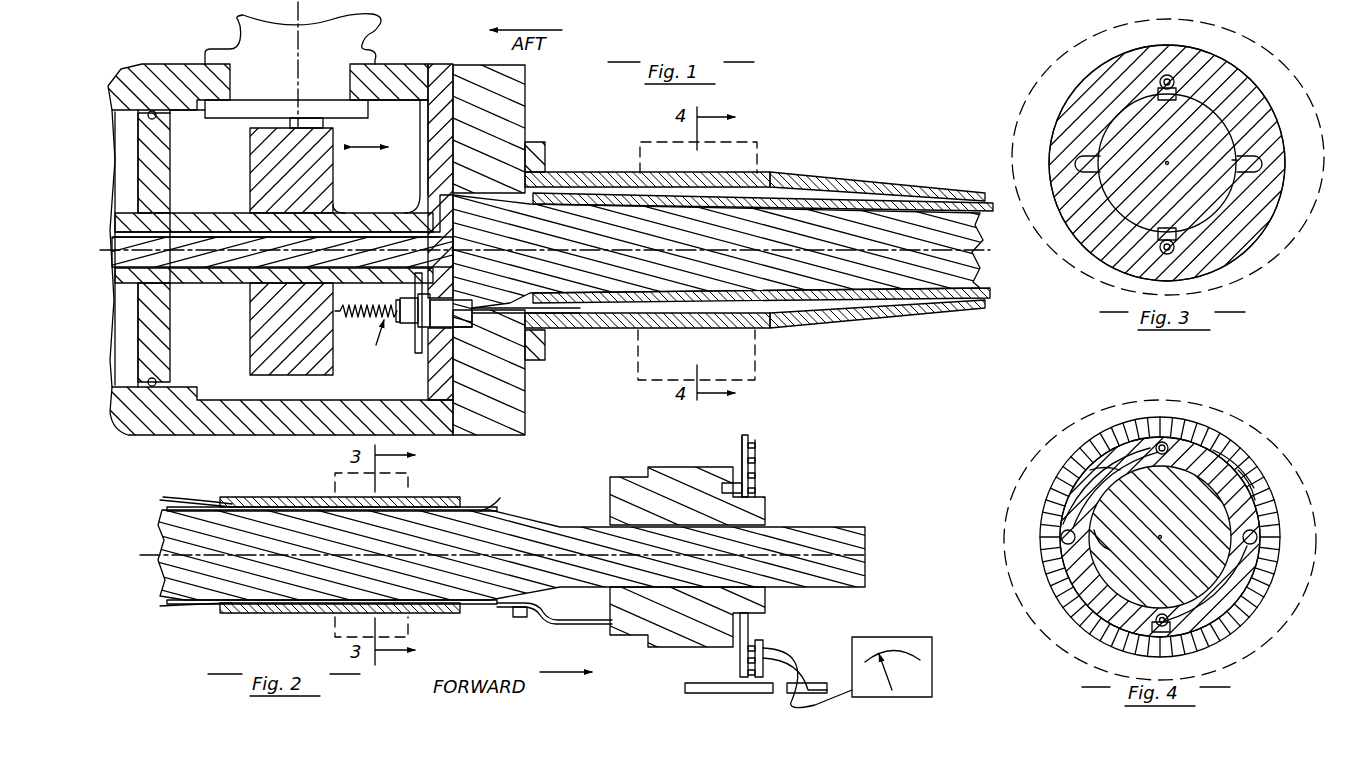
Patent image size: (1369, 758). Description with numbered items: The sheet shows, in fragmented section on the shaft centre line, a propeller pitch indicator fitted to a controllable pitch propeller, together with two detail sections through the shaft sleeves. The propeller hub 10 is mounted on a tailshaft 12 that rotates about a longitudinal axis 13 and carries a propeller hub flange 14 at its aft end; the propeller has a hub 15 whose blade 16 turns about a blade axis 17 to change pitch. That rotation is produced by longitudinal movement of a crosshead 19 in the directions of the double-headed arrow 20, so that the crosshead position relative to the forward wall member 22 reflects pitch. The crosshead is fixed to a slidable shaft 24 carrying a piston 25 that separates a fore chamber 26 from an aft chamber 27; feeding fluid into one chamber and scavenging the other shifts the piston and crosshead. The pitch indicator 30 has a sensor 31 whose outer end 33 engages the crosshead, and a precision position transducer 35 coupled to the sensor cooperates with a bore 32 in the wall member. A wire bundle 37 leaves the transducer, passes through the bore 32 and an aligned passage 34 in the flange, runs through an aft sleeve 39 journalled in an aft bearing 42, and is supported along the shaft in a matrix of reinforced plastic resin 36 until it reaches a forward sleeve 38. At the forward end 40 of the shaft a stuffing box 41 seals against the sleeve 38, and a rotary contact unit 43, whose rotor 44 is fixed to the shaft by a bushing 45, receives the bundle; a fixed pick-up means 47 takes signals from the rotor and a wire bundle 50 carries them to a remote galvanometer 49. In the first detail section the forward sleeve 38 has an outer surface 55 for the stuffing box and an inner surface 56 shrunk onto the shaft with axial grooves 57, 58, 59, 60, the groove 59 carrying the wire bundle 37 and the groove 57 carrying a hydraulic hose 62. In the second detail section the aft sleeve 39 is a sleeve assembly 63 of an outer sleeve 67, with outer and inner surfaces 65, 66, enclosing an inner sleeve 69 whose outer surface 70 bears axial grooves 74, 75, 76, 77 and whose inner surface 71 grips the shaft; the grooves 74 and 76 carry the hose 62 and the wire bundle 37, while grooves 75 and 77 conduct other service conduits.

In FIG. 1, the propeller hub 10 is at (174, 54).
In FIG. 1, the tailshaft 12 is at (962, 291).
In FIG. 2, the tailshaft 12 is at (146, 565).
In FIG. 3, the tailshaft 12 is at (1168, 143).
In FIG. 4, the tailshaft 12 is at (1196, 531).
In FIG. 1, the longitudinal axis 13 is at (982, 264).
In FIG. 2, the longitudinal axis 13 is at (147, 555).
In FIG. 3, the longitudinal axis 13 is at (1172, 168).
In FIG. 4, the longitudinal axis 13 is at (1166, 541).
In FIG. 1, the propeller hub flange 14 is at (516, 94).
In FIG. 1, the hub 15 is at (160, 441).
In FIG. 1, the propeller blade 16 is at (368, 47).
In FIG. 1, the blade axis 17 is at (296, 38).
In FIG. 1, the crosshead 19 is at (318, 192).
In FIG. 1, the double-headed arrow 20 is at (372, 147).
In FIG. 1, the forward wall member 22 is at (425, 382).
In FIG. 1, the slidable shaft 24 is at (220, 212).
In FIG. 1, the piston 25 is at (155, 153).
In FIG. 1, the fore chamber 26 is at (216, 315).
In FIG. 1, the aft chamber 27 is at (124, 332).
In FIG. 1, the pitch indicator 30 is at (406, 330).
In FIG. 2, the pitch indicator 30 is at (805, 630).
In FIG. 1, the sensor 31 is at (363, 340).
In FIG. 1, the bore 32 is at (446, 330).
In FIG. 1, the outer end 33 is at (337, 313).
In FIG. 1, the passage 34 is at (508, 293).
In FIG. 1, the precision position transducer 35 is at (400, 303).
In FIG. 1, the matrix of reinforced plastic resin 36 is at (828, 186).
In FIG. 2, the matrix of reinforced plastic resin 36 is at (222, 496).
In FIG. 1, the wire bundle 37 is at (556, 328).
In FIG. 2, the wire bundle 37 is at (564, 624).
In FIG. 3, the wire bundle 37 is at (1176, 253).
In FIG. 4, the wire bundle 37 is at (1150, 640).
In FIG. 2, the forward sleeve 38 is at (440, 494).
In FIG. 3, the forward sleeve 38 is at (1290, 146).
In FIG. 1, the aft sleeve 39 is at (570, 170).
In FIG. 4, the aft sleeve 39 is at (1286, 498).
In FIG. 2, the forward end 40 is at (814, 528).
In FIG. 2, the stuffing box 41 is at (325, 490).
In FIG. 3, the stuffing box 41 is at (1025, 86).
In FIG. 1, the aft bearing 42 is at (752, 360).
In FIG. 4, the aft bearing 42 is at (1085, 402).
In FIG. 2, the rotary contact unit 43 is at (764, 460).
In FIG. 2, the rotor 44 is at (736, 440).
In FIG. 2, the bushing 45 is at (668, 470).
In FIG. 2, the pick-up means 47 is at (770, 648).
In FIG. 2, the galvanometer 49 is at (910, 640).
In FIG. 2, the wire bundle 50 is at (838, 682).
In FIG. 3, the outer surface 55 is at (1280, 220).
In FIG. 3, the inner surface 56 is at (1218, 204).
In FIG. 3, the axial groove 57 is at (1178, 89).
In FIG. 3, the axial groove 58 is at (1252, 176).
In FIG. 3, the axial groove 59 is at (1158, 240).
In FIG. 3, the axial groove 60 is at (1098, 166).
In FIG. 1, the hydraulic hose 62 is at (630, 170).
In FIG. 3, the hydraulic hose 62 is at (1160, 82).
In FIG. 4, the hydraulic hose 62 is at (1158, 444).
In FIG. 4, the sleeve assembly 63 is at (1220, 430).
In FIG. 4, the outer surface 65 is at (1090, 442).
In FIG. 4, the inner surface 66 is at (1156, 490).
In FIG. 4, the outer sleeve 67 is at (1236, 452).
In FIG. 4, the inner sleeve 69 is at (1272, 465).
In FIG. 4, the outer surface 70 is at (1080, 480).
In FIG. 4, the inner surface 71 is at (1097, 538).
In FIG. 4, the axial groove 74 is at (1196, 407).
In FIG. 4, the axial groove 75 is at (1258, 538).
In FIG. 4, the axial groove 76 is at (1200, 640).
In FIG. 4, the axial groove 77 is at (1062, 536).